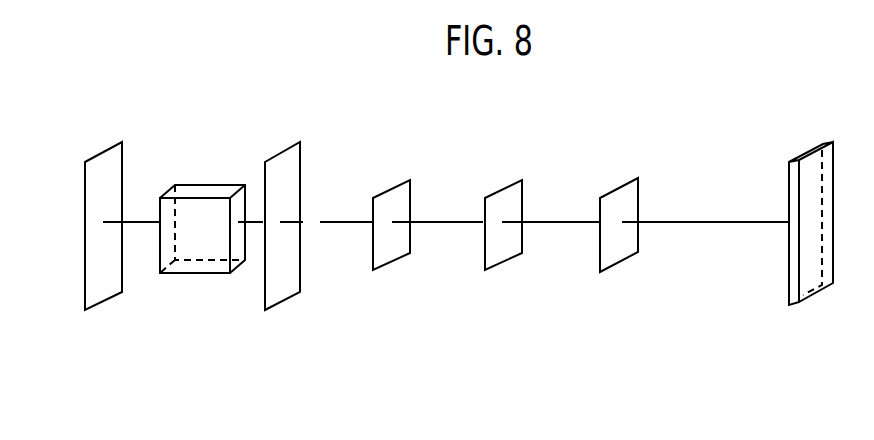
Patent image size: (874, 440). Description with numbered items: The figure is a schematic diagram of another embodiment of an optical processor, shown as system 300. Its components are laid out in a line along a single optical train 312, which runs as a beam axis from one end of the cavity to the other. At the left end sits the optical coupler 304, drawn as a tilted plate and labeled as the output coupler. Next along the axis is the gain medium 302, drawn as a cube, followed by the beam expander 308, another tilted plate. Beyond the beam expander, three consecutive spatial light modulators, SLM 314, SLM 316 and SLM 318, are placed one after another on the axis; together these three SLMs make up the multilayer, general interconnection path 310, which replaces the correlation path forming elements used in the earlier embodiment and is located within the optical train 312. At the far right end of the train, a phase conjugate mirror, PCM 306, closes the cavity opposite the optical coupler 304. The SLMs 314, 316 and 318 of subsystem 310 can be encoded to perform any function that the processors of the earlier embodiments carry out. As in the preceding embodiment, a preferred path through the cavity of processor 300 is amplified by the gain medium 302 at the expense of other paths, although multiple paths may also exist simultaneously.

The processor 300 is at (442, 123).
The gain medium 302 is at (195, 183).
The optical coupler 304 is at (102, 152).
The PCM 306 is at (808, 150).
The beam expander 308 is at (280, 152).
The interconnection path 310 is at (435, 162).
The optical train 312 is at (705, 222).
The SLM 314 is at (388, 188).
The SLM 316 is at (497, 190).
The SLM 318 is at (615, 187).